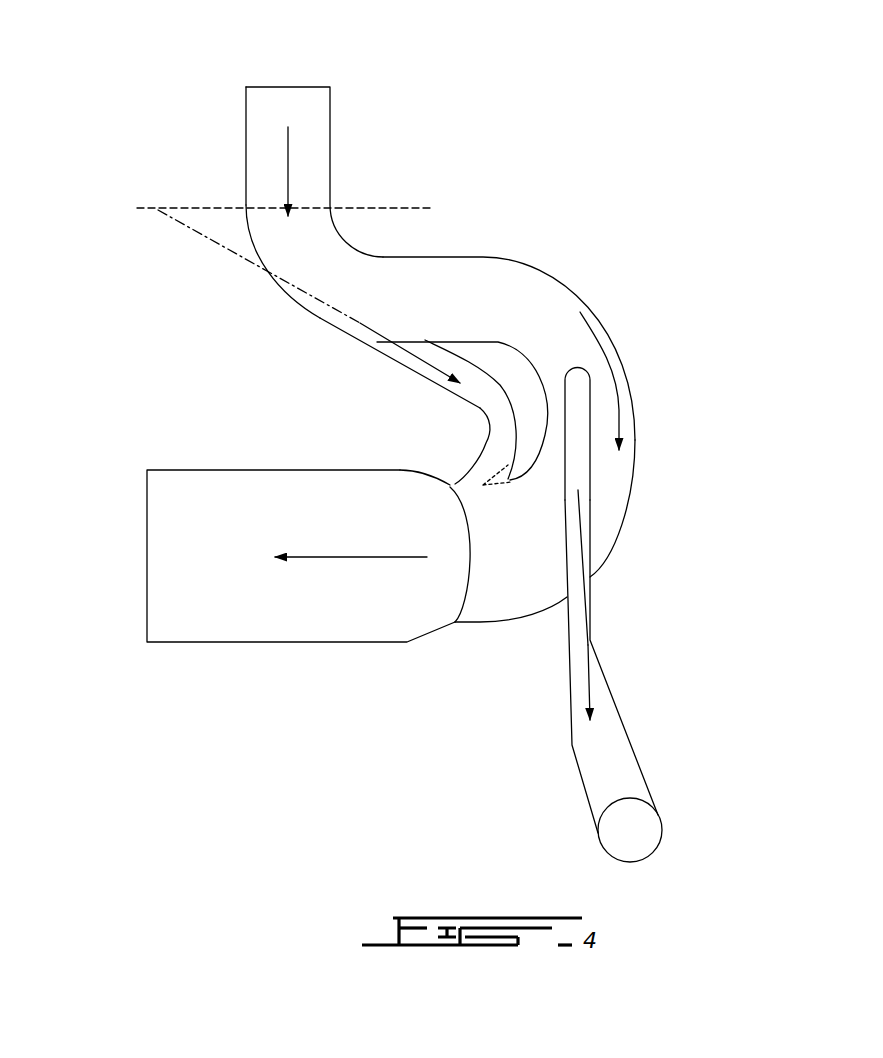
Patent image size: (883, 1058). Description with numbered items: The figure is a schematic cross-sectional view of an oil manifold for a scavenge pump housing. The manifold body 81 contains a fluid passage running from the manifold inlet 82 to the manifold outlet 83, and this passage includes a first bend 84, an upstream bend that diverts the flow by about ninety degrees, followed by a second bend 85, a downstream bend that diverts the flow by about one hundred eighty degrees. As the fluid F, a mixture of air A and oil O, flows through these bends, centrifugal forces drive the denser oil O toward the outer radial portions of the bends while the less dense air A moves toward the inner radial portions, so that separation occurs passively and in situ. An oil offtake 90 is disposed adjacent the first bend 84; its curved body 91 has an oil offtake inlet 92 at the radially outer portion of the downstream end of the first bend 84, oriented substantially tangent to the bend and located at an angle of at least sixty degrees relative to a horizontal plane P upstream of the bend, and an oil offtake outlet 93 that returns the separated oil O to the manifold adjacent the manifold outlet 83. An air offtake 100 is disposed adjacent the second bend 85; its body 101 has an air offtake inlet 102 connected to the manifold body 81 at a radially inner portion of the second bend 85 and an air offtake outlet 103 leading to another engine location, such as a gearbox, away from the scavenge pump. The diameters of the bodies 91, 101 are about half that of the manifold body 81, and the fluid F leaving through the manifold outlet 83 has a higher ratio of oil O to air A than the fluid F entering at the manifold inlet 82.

The manifold inlet 82 is at (298, 72).
The first bend 84 is at (280, 290).
The second bend 85 is at (548, 280).
The manifold body 81 is at (640, 482).
The oil offtake 90 is at (364, 401).
The oil offtake inlet 92 is at (376, 348).
The body 91 is at (481, 424).
The oil offtake outlet 93 is at (448, 479).
The manifold outlet 83 is at (247, 622).
The air offtake inlet 102 is at (586, 396).
The air offtake 100 is at (620, 607).
The body 101 is at (590, 495).
The air offtake outlet 103 is at (668, 818).
The oil O is at (437, 358).
The horizontal plane P is at (273, 210).
The fluid F is at (318, 146).
The air A is at (592, 650).